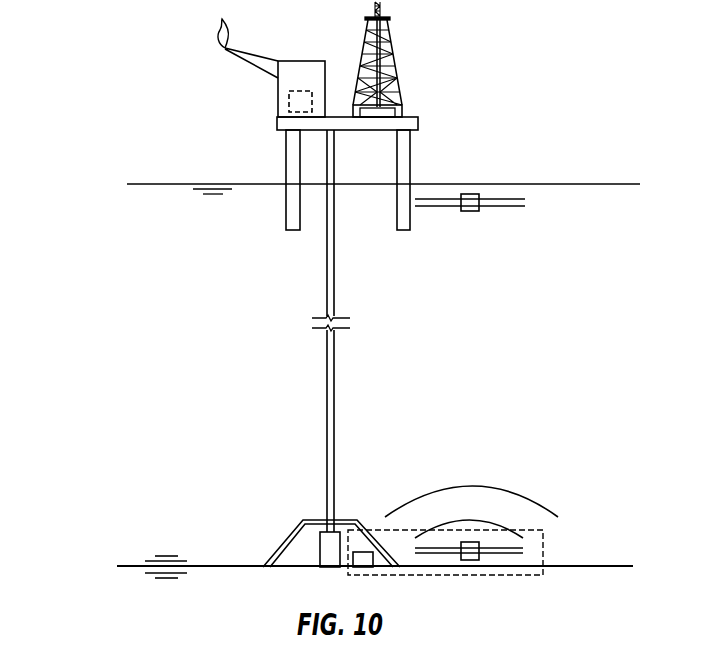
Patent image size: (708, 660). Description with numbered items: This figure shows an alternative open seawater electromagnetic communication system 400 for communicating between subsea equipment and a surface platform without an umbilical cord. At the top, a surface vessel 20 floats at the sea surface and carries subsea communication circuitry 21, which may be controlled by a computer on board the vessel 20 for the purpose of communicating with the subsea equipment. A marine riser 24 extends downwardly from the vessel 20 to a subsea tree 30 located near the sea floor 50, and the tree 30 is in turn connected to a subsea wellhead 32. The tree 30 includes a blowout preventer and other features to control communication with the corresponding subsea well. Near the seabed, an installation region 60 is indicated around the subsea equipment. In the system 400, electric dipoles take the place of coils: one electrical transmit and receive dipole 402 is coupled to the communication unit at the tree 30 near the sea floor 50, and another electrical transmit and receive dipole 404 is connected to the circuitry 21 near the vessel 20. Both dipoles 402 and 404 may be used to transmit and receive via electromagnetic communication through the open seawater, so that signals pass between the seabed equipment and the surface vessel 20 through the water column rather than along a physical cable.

The open seawater electromagnetic communication system 400 is at (117, 65).
The surface vessel 20 is at (410, 157).
The subsea communication circuitry 21 is at (293, 91).
The marine riser 24 is at (334, 277).
The subsea tree 30 is at (303, 519).
The subsea wellhead 32 is at (330, 552).
The sea floor 50 is at (587, 567).
The subsea installation region 60 is at (482, 575).
The electrical transmit and receive dipole 402 is at (500, 548).
The electrical transmit and receive dipole 404 is at (497, 199).